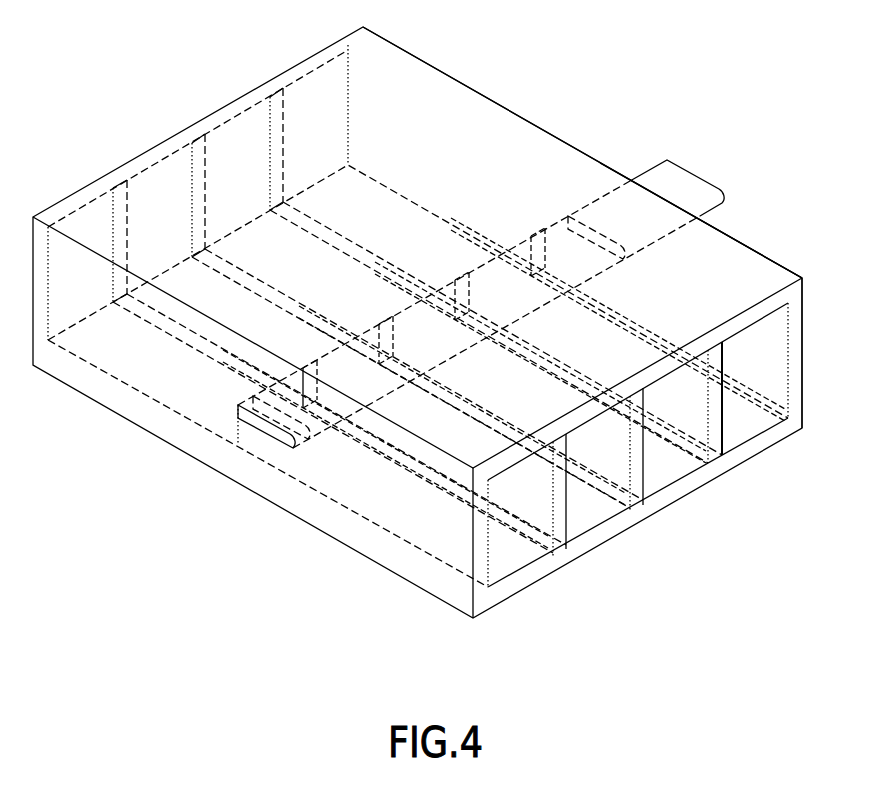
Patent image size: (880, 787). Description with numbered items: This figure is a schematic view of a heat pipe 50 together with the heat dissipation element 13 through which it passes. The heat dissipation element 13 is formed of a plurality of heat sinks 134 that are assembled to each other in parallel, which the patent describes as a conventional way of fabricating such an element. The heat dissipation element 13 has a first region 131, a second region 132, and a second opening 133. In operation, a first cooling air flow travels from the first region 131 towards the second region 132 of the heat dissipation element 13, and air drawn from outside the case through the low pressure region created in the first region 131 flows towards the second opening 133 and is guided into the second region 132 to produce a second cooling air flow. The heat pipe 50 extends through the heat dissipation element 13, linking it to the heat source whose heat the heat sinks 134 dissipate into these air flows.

The heat dissipation element 13 is at (583, 152).
The first region 131 is at (719, 251).
The second region 132 is at (455, 96).
The second opening 133 is at (303, 458).
The heat sinks 134 is at (727, 427).
The heat pipe 50 is at (695, 171).